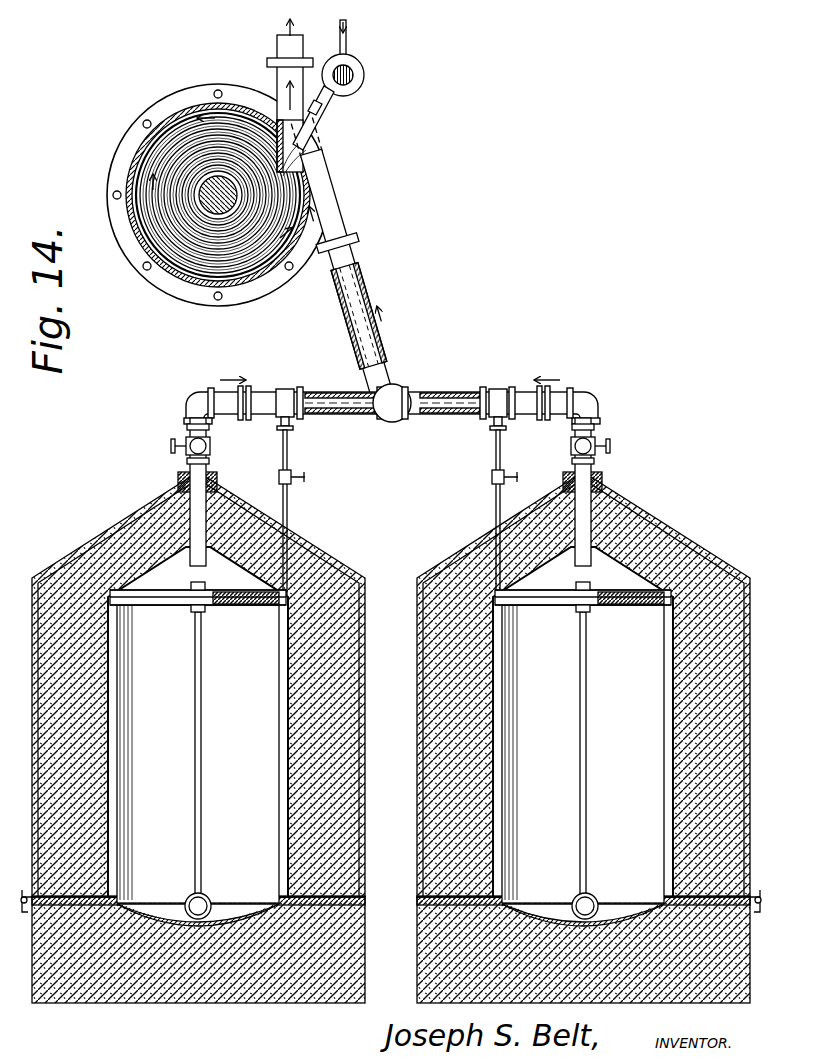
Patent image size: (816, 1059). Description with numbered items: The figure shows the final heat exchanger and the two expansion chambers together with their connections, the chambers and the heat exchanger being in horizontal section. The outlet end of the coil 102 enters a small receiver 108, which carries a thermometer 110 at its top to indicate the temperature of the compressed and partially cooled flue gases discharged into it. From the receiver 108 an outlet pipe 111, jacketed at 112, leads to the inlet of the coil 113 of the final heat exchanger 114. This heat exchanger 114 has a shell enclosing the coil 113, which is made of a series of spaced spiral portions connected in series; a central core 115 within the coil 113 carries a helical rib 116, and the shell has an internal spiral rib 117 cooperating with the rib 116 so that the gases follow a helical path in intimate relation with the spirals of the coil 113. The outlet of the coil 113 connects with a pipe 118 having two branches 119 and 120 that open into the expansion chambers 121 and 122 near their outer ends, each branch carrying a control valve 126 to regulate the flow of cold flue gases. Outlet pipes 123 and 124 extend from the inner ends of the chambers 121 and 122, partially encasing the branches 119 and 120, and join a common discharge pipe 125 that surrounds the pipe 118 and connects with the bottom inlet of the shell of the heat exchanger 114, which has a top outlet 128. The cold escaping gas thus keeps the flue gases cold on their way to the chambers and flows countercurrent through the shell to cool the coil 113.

The coil 102 is at (347, 38).
The receiver 108 is at (358, 92).
The thermometer 110 is at (363, 90).
The outlet pipe 111 is at (320, 112).
The jacket 112 is at (330, 139).
The coil 113 is at (230, 256).
The final heat exchanger 114 is at (206, 188).
The central core 115 is at (180, 132).
The helical rib 116 is at (233, 176).
The internal spiral rib 117 is at (186, 270).
The pipe 118 is at (350, 256).
The branch pipe 119 is at (288, 510).
The branch pipe 120 is at (494, 500).
The expansion chamber 121 is at (198, 765).
The expansion chamber 122 is at (583, 765).
The outlet pipe 123 is at (162, 462).
The outlet pipe 124 is at (578, 477).
The common discharge pipe 125 is at (358, 282).
The control valve 126 is at (294, 477).
The top outlet 128 is at (282, 84).